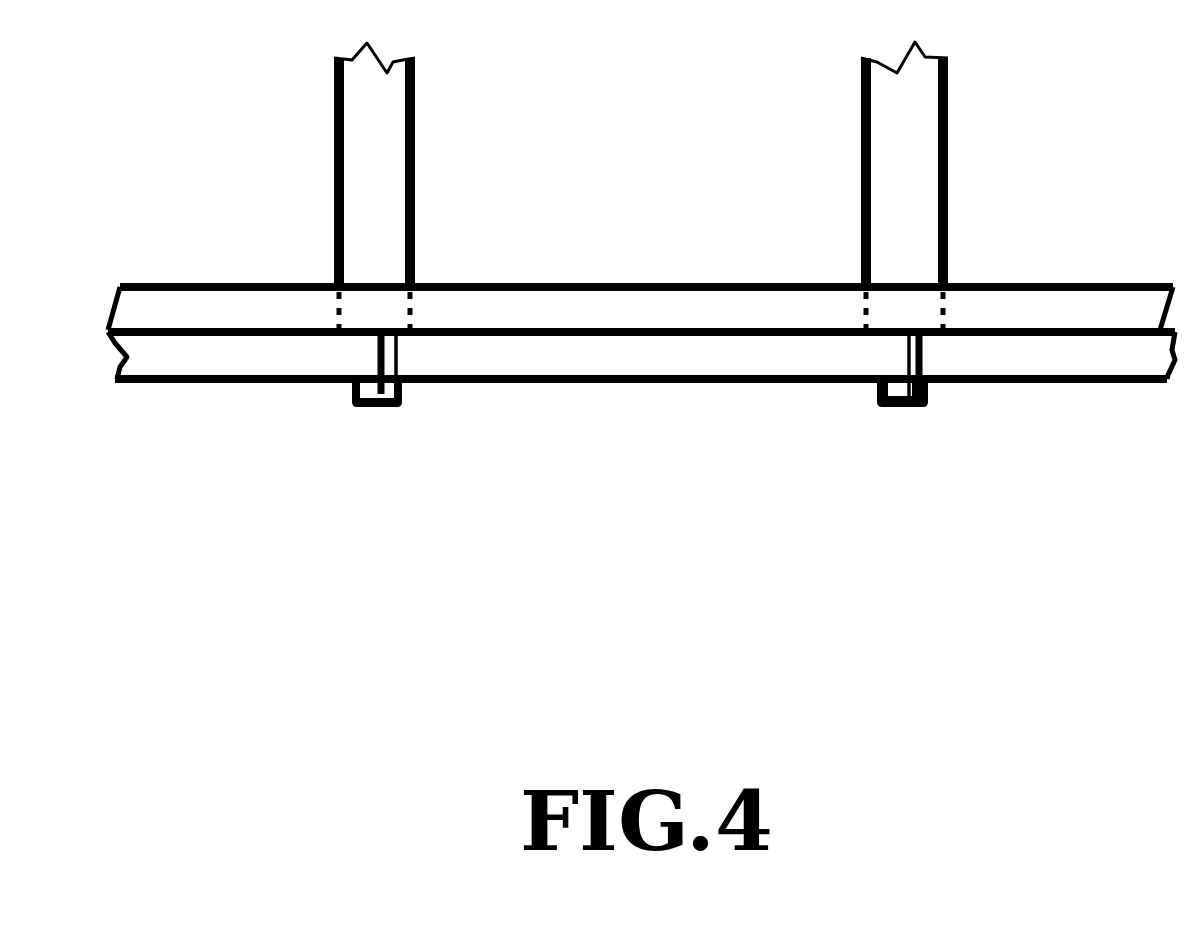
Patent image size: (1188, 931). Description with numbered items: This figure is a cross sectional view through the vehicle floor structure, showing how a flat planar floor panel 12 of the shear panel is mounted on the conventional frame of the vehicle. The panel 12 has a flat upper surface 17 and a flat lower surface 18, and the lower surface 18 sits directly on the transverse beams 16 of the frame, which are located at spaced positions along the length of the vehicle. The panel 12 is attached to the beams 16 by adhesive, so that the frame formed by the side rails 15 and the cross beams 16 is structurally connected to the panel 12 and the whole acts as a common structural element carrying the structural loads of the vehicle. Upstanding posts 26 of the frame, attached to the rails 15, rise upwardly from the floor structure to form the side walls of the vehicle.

The panel 12 is at (557, 310).
The side rails 15 is at (728, 353).
The transverse beams 16 is at (373, 407).
The upper surface 17 is at (702, 283).
The lower surface 18 is at (555, 332).
The upstanding posts 26 is at (370, 148).